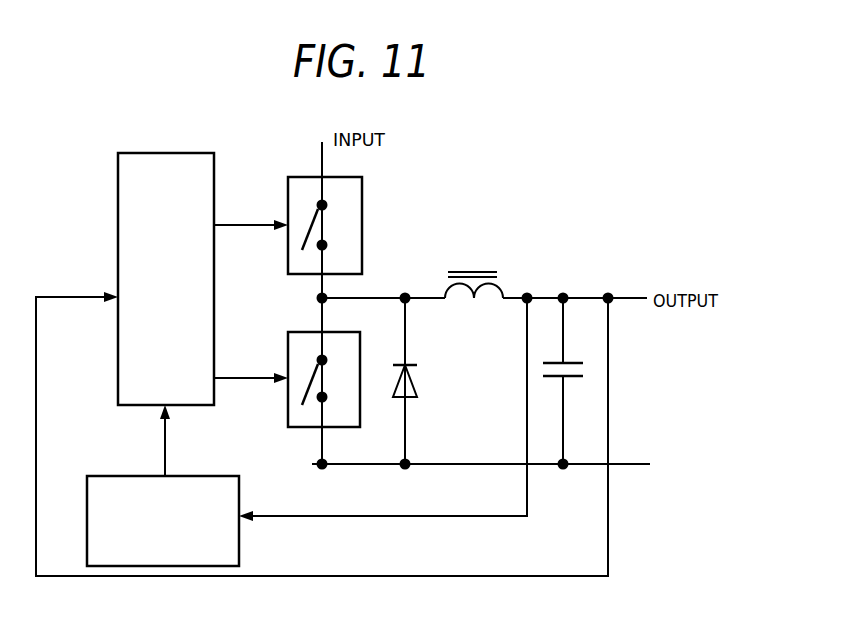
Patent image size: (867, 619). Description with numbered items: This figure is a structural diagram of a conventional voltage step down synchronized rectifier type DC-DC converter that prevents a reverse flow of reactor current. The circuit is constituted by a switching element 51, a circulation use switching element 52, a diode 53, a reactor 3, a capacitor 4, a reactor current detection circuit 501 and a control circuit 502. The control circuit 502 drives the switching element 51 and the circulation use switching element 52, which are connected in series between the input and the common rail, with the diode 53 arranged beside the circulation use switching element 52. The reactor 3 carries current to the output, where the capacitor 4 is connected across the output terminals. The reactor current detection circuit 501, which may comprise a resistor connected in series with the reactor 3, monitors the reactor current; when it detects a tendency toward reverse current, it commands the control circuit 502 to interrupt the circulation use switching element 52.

The control circuit 502 is at (162, 152).
The switching element 51 is at (352, 223).
The circulation use switching element 52 is at (352, 366).
The diode 53 is at (418, 372).
The reactor 3 is at (474, 272).
The capacitor 4 is at (569, 361).
The reactor current detection circuit 501 is at (212, 475).